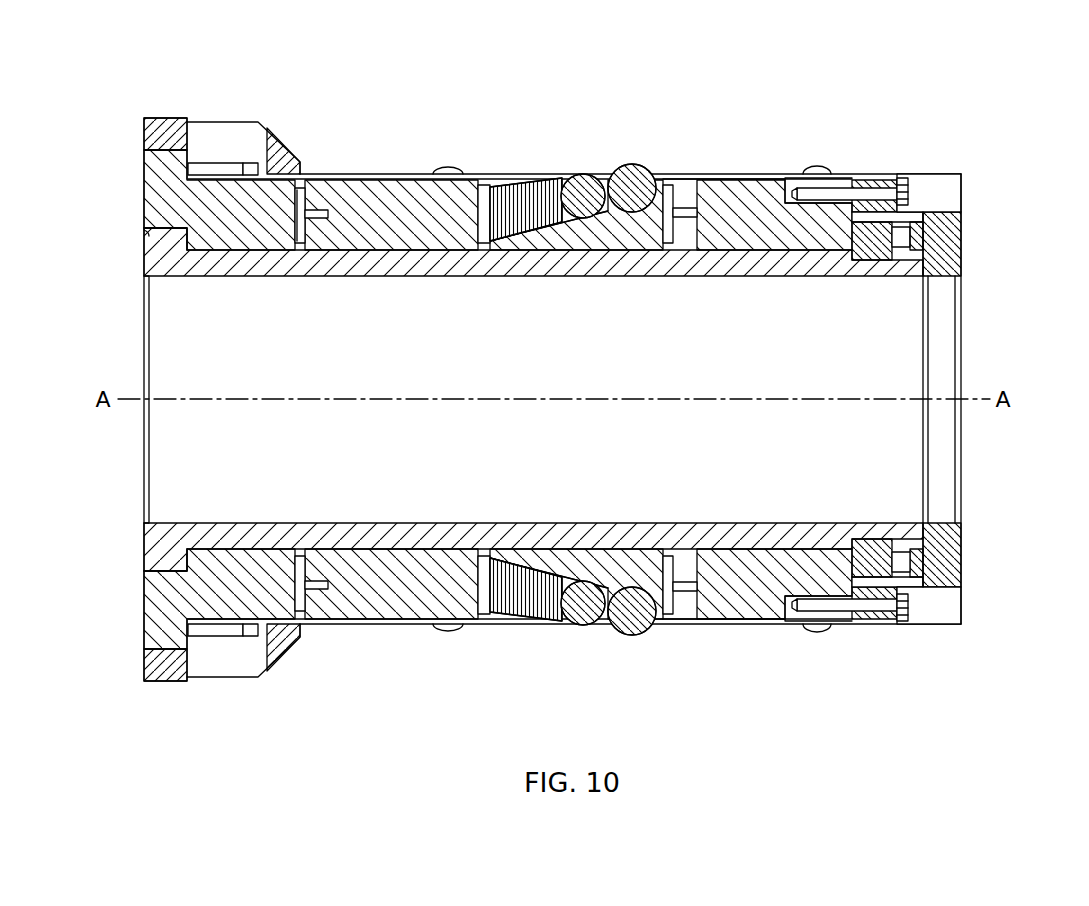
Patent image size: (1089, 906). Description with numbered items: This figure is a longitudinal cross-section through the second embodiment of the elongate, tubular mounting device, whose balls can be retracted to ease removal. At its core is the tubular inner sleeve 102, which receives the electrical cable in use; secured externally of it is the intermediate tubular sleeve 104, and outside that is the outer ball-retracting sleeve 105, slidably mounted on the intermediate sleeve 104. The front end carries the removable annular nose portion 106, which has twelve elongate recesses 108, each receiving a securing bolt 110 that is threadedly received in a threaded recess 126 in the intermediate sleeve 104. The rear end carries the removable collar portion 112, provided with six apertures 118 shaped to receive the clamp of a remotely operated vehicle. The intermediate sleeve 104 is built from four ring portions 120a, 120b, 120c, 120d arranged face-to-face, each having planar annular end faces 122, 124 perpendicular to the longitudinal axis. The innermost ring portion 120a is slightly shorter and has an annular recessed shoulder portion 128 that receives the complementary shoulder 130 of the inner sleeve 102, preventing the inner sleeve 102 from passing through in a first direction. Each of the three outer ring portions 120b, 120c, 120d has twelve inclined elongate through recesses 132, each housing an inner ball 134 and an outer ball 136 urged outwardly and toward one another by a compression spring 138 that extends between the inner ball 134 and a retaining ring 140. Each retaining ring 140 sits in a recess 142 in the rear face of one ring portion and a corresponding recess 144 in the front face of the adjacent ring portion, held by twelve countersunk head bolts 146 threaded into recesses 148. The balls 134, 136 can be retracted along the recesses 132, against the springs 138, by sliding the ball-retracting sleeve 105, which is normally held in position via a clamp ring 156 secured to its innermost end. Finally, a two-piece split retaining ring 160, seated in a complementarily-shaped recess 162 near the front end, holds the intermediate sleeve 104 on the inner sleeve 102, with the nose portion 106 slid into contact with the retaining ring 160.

The tubular inner sleeve 102 is at (705, 262).
The intermediate tubular sleeve 104 is at (410, 619).
The outer ball-retracting sleeve 105 is at (705, 181).
The removable annular nose portion 106 is at (919, 153).
The elongate recesses 108 is at (945, 204).
The securing bolt 110 is at (910, 190).
The removable collar portion 112 is at (156, 101).
The apertures 118 is at (231, 131).
The innermost ring portion 120a is at (240, 247).
The central ring portion 120b is at (415, 245).
The central ring portion 120c is at (605, 247).
The outermost ring portion 120d is at (780, 247).
The planar annular end face 122 is at (660, 557).
The planar annular end face 124 is at (852, 541).
The threaded recesses 126 is at (815, 170).
The annular recessed shoulder portion 128 is at (146, 237).
The shoulder 130 is at (165, 571).
The elongate through recesses 132 is at (575, 230).
The inner ball 134 is at (582, 175).
The outer ball 136 is at (631, 164).
The compression spring 138 is at (487, 185).
The retaining ring 140 is at (322, 606).
The recess 142 is at (300, 558).
The recess 144 is at (302, 190).
The countersunk head bolts 146 is at (326, 212).
The recess 148 is at (329, 214).
The clamp ring 156 is at (255, 638).
The retaining ring 160 is at (865, 257).
The recess 162 is at (878, 552).